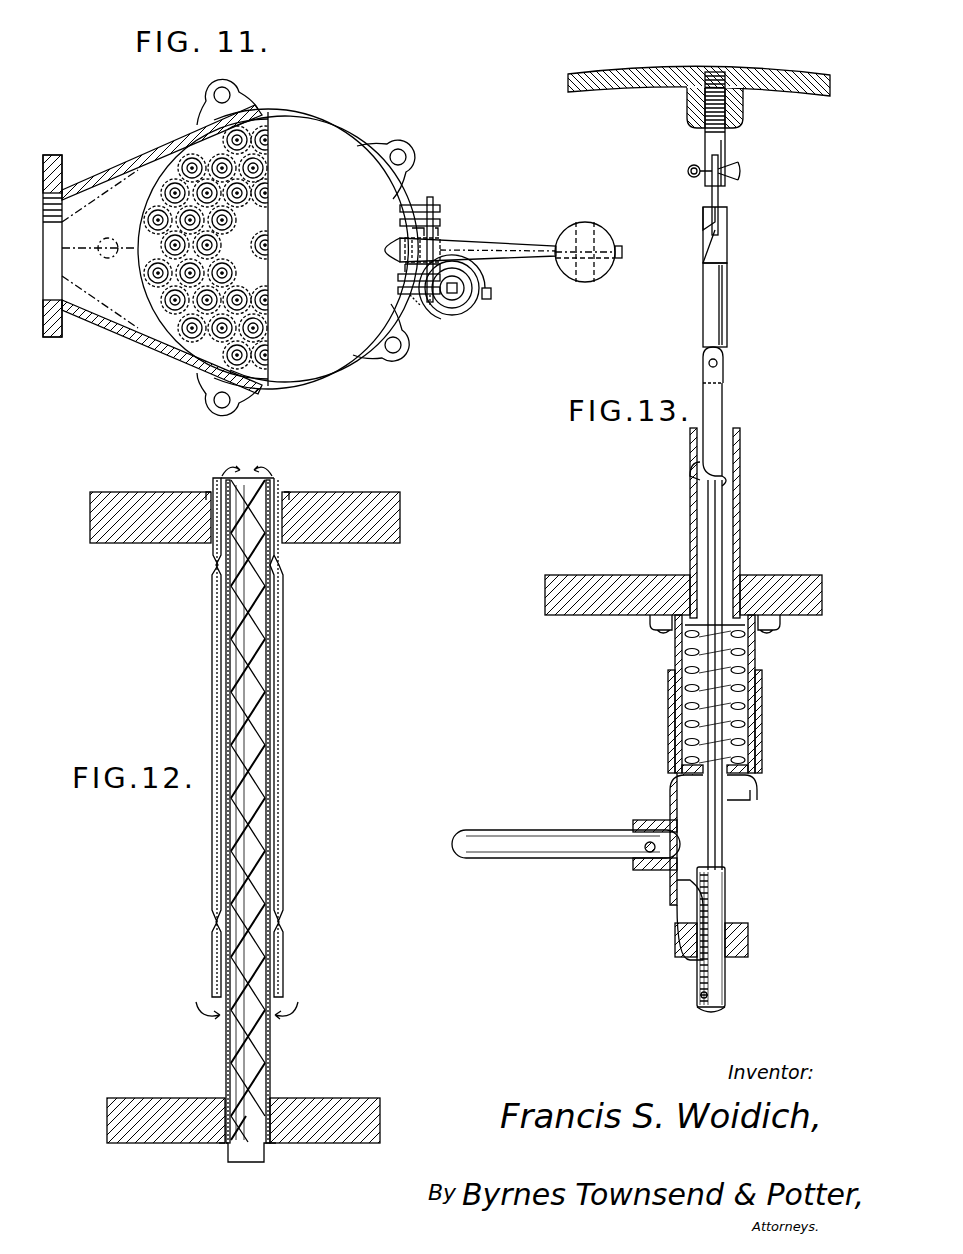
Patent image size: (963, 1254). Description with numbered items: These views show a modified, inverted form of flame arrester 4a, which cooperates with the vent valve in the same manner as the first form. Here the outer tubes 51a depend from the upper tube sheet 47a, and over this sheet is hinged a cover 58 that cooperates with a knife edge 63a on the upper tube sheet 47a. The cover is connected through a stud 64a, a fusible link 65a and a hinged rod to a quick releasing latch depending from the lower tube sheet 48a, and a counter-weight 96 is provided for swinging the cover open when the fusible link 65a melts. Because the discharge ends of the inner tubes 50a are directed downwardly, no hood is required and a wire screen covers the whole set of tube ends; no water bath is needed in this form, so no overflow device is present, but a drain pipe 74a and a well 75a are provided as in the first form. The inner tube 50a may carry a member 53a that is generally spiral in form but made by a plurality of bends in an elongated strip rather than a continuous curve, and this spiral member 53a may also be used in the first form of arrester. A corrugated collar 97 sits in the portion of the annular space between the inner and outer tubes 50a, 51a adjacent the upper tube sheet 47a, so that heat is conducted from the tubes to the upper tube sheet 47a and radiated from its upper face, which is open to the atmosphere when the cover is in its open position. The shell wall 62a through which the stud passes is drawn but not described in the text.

In FIG. 11, the flame arrester 4a is at (374, 131).
In FIG. 11, the cover 58 is at (320, 128).
In FIG. 11, the upper tube sheet 47a is at (190, 128).
In FIG. 12, the upper tube sheet 47a is at (120, 497).
In FIG. 12, the lower tube sheet 48a is at (157, 1106).
In FIG. 12, the inner tube 50a is at (271, 1041).
In FIG. 12, the outer tube 51a is at (283, 728).
In FIG. 12, the spiral member 53a is at (240, 1146).
In FIG. 13, the shell wall 62a is at (748, 67).
In FIG. 13, the knife edge 63a is at (728, 400).
In FIG. 13, the stud 64a is at (729, 147).
In FIG. 13, the fusible link 65a is at (723, 195).
In FIG. 11, the drain pipe 74a is at (418, 298).
In FIG. 11, the well 75a is at (473, 317).
In FIG. 11, the counter-weight 96 is at (562, 229).
In FIG. 12, the corrugated collar 97 is at (276, 479).